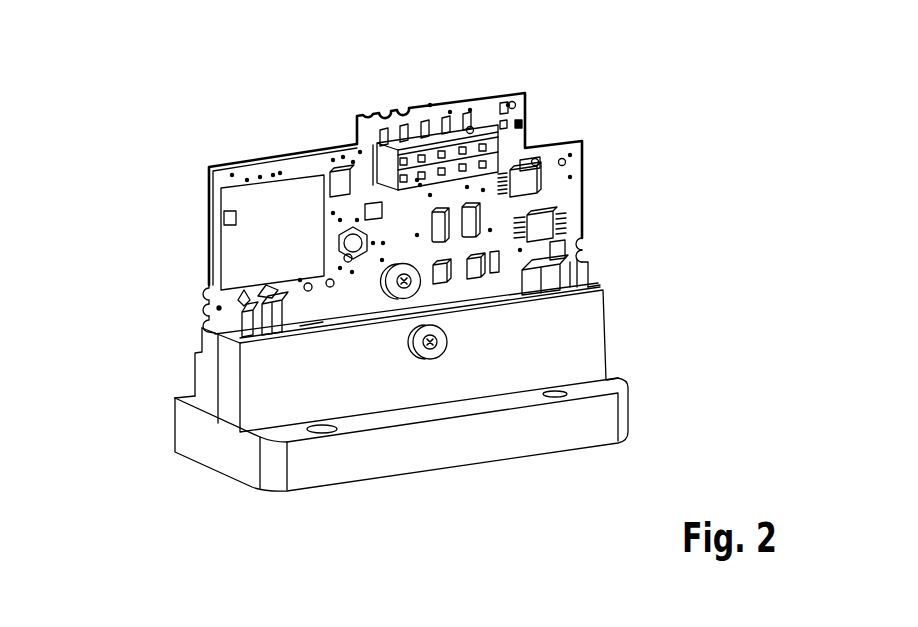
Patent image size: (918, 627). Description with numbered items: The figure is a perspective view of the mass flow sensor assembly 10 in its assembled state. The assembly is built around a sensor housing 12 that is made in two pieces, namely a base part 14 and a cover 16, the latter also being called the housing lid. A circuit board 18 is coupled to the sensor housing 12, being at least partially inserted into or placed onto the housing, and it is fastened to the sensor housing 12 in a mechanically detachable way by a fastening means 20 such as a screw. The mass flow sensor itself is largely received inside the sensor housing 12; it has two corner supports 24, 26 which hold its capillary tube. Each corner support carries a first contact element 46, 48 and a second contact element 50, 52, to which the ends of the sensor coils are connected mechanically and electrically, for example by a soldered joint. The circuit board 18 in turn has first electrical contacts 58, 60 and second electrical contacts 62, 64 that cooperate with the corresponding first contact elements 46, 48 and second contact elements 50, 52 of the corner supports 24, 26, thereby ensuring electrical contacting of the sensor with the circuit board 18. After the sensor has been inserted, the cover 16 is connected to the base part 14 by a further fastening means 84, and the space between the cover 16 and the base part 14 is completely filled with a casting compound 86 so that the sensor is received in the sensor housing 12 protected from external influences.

The mass flow sensor assembly 10 is at (140, 105).
The sensor housing 12 is at (168, 386).
The base part 14 is at (197, 437).
The cover 16 is at (585, 357).
The circuit board 18 is at (304, 153).
The fastening means 20 is at (398, 300).
The corner support 24 is at (210, 323).
The corner support 26 is at (588, 293).
The first contact element 46 is at (250, 297).
The first contact element 48 is at (577, 285).
The second contact element 50 is at (283, 290).
The second contact element 52 is at (580, 263).
The first electrical contact 58 is at (207, 303).
The first electrical contact 60 is at (585, 236).
The second electrical contact 62 is at (263, 295).
The second electrical contact 64 is at (508, 262).
The fastening means 84 is at (440, 357).
The casting compound 86 is at (323, 322).